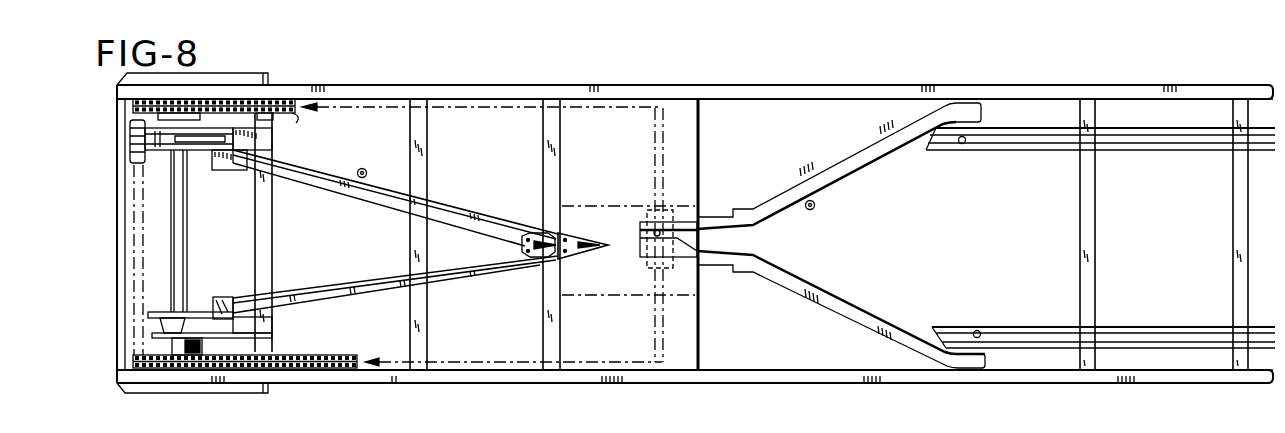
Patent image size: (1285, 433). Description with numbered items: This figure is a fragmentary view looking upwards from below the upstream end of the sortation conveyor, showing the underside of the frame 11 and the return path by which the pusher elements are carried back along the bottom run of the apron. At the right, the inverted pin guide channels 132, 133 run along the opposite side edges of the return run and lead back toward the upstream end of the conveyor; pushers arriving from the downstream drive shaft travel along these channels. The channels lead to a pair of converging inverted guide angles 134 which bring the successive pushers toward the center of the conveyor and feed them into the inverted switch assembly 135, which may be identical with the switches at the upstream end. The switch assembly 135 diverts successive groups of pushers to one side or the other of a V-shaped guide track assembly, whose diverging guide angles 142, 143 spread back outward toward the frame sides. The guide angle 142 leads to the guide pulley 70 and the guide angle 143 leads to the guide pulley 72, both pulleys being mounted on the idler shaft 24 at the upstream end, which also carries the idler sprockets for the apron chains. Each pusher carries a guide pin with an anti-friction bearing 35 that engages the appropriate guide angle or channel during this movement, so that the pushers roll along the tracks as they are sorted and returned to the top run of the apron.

The frame 11 is at (622, 85).
The idler shaft 24 is at (198, 242).
The anti-friction bearing 35 is at (365, 168).
The guide pulley 70 is at (205, 164).
The guide pulley 72 is at (206, 302).
The inverted pin guide channel 132 is at (1114, 152).
The inverted pin guide channel 133 is at (1123, 328).
The converging inverted guide angles 134 is at (880, 167).
The inverted switch assembly 135 is at (582, 294).
The diverging guide angle 142 is at (468, 207).
The diverging guide angle 143 is at (450, 285).